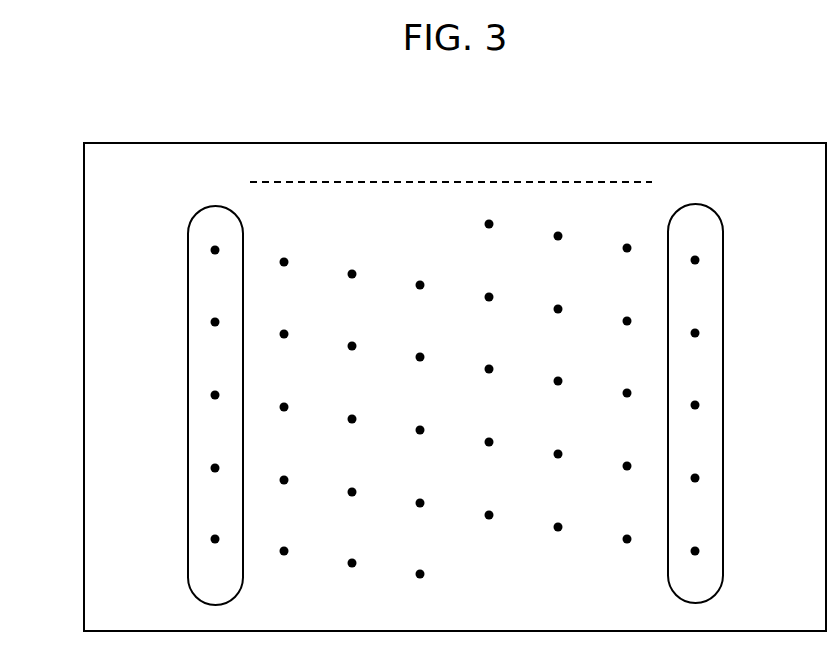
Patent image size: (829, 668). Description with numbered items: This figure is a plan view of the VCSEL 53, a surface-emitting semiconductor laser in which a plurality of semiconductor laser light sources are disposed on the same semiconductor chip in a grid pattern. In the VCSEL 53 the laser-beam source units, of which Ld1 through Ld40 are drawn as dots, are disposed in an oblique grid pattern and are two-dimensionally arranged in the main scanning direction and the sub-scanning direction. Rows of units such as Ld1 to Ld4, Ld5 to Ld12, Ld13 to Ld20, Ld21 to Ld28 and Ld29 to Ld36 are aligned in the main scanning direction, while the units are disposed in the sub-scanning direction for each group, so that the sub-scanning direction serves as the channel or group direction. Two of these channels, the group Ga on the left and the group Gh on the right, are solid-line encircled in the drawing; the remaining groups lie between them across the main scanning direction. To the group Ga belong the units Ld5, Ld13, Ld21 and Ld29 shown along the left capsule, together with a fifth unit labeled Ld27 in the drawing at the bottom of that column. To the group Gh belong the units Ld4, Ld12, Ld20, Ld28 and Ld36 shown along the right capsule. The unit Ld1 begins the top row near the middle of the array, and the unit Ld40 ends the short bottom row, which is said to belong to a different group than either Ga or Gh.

The VCSEL 53 is at (619, 121).
The group Ga is at (215, 388).
The group Gh is at (695, 387).
The laser-beam source unit Ld1 is at (464, 224).
The laser-beam source unit Ld4 is at (730, 260).
The laser-beam source unit Ld5 is at (171, 250).
The laser-beam source unit Ld12 is at (735, 333).
The laser-beam source unit Ld13 is at (171, 322).
The laser-beam source unit Ld20 is at (735, 405).
The laser-beam source unit Ld21 is at (171, 395).
The laser-beam source unit Ld27 is at (171, 539).
The laser-beam source unit Ld28 is at (735, 478).
The laser-beam source unit Ld29 is at (171, 468).
The laser-beam source unit Ld36 is at (735, 551).
The laser-beam source unit Ld40 is at (450, 574).